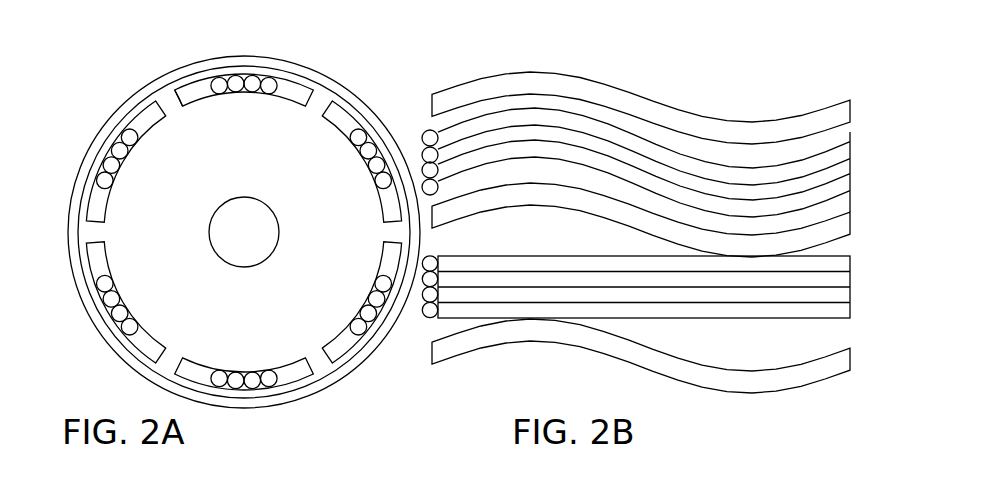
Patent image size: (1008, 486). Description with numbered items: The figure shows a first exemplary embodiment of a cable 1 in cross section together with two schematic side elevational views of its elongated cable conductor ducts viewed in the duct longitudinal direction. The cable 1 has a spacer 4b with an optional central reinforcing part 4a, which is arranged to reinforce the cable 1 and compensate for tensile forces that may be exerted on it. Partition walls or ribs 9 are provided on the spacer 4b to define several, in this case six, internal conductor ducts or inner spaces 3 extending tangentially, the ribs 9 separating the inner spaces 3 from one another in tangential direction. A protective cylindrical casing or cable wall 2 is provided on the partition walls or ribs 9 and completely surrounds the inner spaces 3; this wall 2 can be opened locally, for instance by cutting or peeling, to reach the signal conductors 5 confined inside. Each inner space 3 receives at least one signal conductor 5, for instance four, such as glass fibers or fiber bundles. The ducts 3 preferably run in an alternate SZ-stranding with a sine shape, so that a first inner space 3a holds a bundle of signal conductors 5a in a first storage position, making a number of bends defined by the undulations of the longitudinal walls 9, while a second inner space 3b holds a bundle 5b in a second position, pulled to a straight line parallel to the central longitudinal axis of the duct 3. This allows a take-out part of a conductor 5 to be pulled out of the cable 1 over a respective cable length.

In FIG. 2A, the cable 1 is at (187, 51).
In FIG. 2A, the cable wall 2 is at (92, 152).
In FIG. 2A, the inner space 3 is at (287, 83).
In FIG. 2B, the first inner space 3a is at (668, 223).
In FIG. 2B, the second inner space 3b is at (723, 355).
In FIG. 2A, the reinforcing part 4a is at (245, 232).
In FIG. 2A, the spacer 4b is at (272, 162).
In FIG. 2A, the signal conductor 5 is at (380, 181).
In FIG. 2B, the bundle of signal conductors 5a is at (838, 200).
In FIG. 2B, the bundle of signal conductors 5b is at (843, 265).
In FIG. 2A, the partition walls or ribs 9 is at (160, 108).
In FIG. 2B, the partition walls or ribs 9 is at (623, 222).